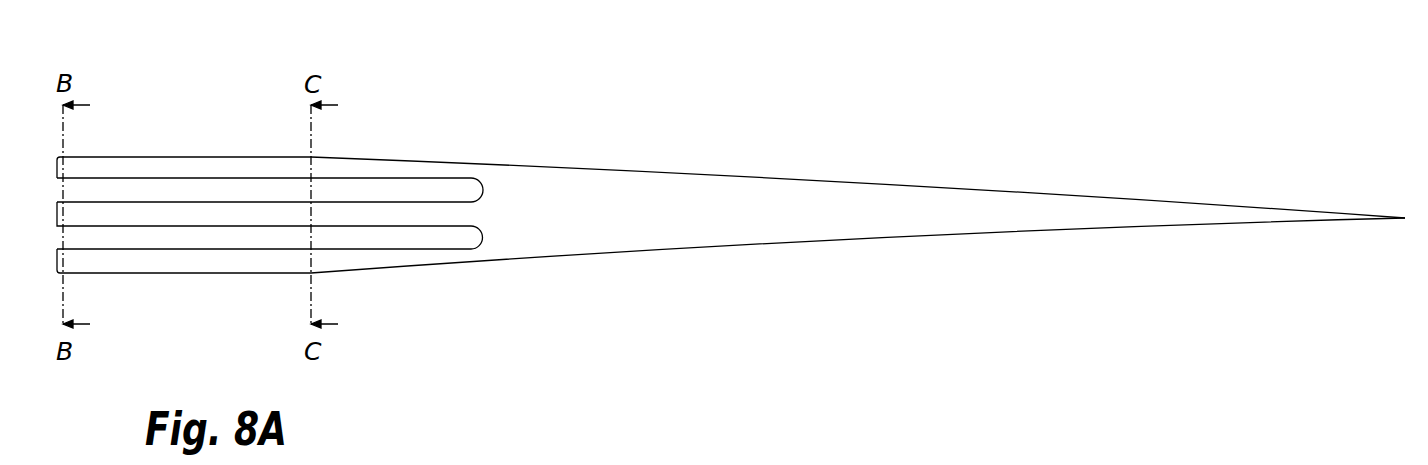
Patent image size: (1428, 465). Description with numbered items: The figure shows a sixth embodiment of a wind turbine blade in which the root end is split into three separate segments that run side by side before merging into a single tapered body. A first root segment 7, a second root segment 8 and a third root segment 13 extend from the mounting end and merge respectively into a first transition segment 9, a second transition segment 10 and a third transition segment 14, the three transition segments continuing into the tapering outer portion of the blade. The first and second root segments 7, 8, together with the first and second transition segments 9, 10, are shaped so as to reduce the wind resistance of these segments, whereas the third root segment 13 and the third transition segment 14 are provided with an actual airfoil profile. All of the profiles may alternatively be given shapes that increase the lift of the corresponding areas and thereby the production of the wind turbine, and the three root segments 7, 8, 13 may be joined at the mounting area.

The first root segment 7 is at (175, 167).
The second root segment 8 is at (182, 265).
The first transition segment 9 is at (400, 170).
The second transition segment 10 is at (420, 260).
The third root segment 13 is at (212, 212).
The third transition segment 14 is at (377, 212).